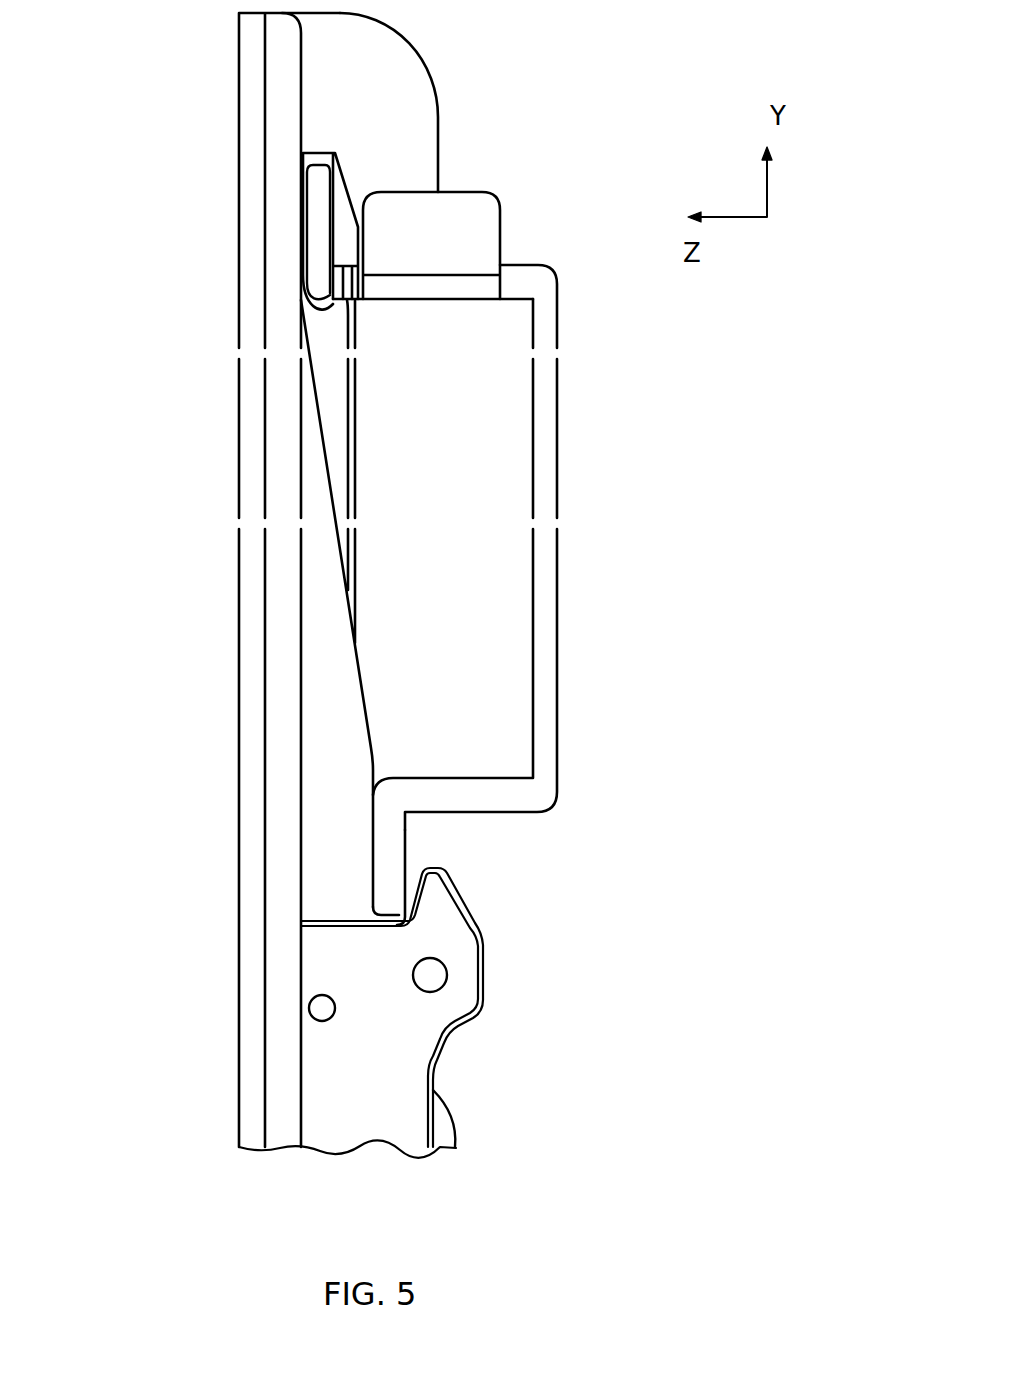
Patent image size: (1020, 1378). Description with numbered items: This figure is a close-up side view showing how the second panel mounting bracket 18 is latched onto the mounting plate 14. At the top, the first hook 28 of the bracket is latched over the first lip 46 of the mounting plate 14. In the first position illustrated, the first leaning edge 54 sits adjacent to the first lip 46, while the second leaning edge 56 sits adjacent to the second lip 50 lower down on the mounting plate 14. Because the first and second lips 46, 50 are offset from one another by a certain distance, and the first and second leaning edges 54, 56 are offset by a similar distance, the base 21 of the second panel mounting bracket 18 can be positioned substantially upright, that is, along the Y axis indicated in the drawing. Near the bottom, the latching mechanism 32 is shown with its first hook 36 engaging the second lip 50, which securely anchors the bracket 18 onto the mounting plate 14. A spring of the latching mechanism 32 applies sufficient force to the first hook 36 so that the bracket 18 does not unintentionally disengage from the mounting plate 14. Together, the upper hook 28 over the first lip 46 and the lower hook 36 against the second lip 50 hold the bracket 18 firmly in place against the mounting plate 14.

The mounting plate 14 is at (586, 447).
The second panel mounting bracket 18 is at (228, 1090).
The base 21 is at (239, 638).
The first hook 28 is at (405, 158).
The latching mechanism 32 is at (393, 1090).
The first hook 36 is at (437, 898).
The first lip 46 is at (318, 190).
The second lip 50 is at (388, 888).
The first leaning edge 54 is at (303, 218).
The second leaning edge 56 is at (375, 832).